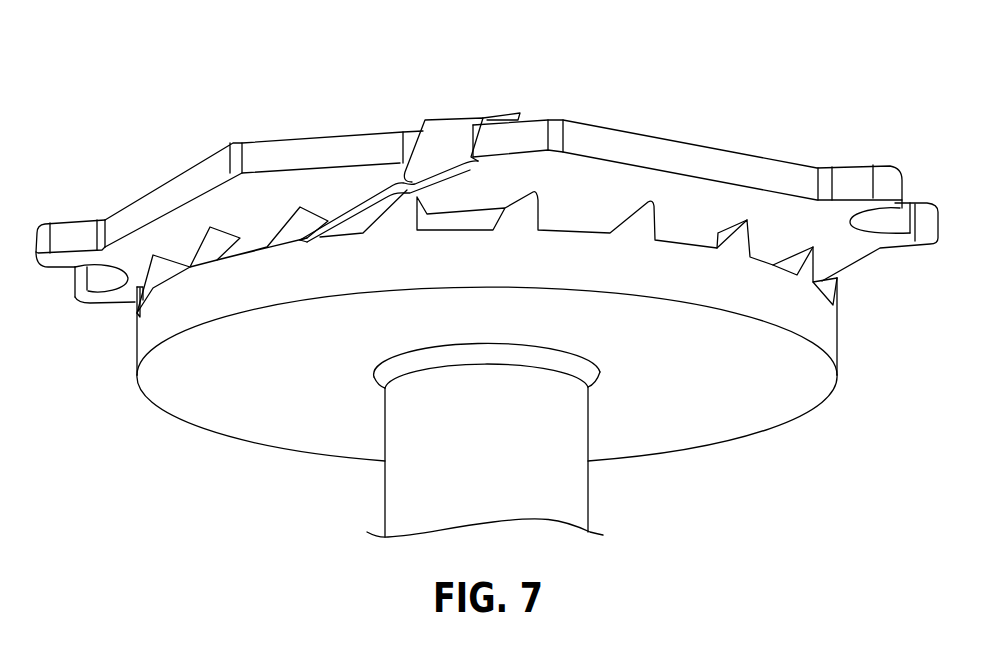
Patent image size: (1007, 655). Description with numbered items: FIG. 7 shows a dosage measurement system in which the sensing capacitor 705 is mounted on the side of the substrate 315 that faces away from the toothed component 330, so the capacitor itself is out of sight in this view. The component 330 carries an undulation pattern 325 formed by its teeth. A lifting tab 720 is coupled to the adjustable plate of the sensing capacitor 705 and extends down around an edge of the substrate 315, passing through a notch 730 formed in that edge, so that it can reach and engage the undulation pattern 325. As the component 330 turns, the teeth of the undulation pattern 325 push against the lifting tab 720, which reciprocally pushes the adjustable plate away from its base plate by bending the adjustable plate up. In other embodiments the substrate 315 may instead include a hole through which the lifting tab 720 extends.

The substrate 315 is at (258, 147).
The undulation pattern 325 is at (185, 285).
The component 330 is at (757, 499).
The sensing capacitor 705 is at (566, 107).
The lifting tab 720 is at (360, 207).
The notch 730 is at (421, 118).